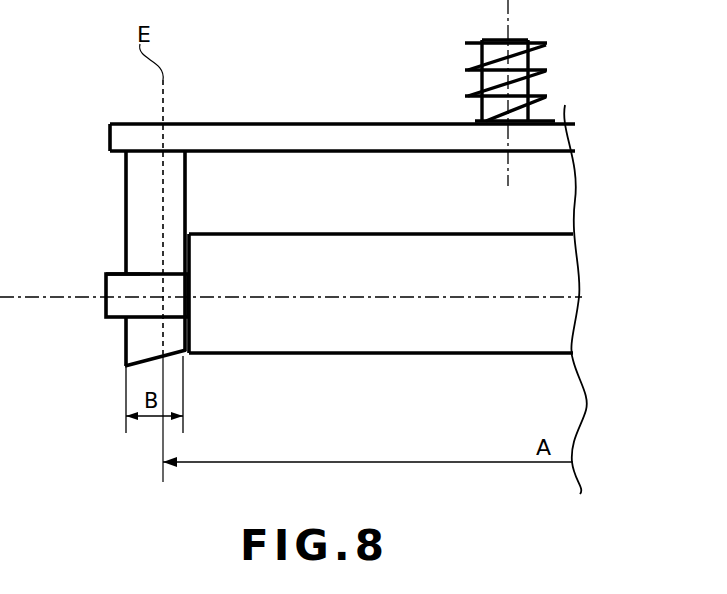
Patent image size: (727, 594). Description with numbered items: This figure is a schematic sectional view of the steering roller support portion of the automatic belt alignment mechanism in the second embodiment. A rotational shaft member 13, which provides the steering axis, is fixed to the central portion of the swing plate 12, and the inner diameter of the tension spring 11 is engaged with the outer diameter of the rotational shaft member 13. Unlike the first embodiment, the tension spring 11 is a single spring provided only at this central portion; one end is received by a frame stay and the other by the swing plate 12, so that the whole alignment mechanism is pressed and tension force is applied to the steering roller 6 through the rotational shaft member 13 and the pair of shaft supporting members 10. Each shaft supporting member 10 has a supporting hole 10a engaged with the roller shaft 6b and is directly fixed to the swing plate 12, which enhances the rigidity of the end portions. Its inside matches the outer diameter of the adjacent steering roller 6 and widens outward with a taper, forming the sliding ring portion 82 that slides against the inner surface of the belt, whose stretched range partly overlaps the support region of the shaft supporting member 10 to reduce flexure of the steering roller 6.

The steering roller 6 is at (340, 328).
The roller shaft 6b is at (108, 273).
The shaft supporting member 10 is at (135, 345).
The supporting hole 10a is at (117, 307).
The tension spring 11 is at (478, 62).
The swing plate 12 is at (283, 123).
The rotational shaft member 13 is at (520, 62).
The sliding ring portion 82 is at (140, 366).